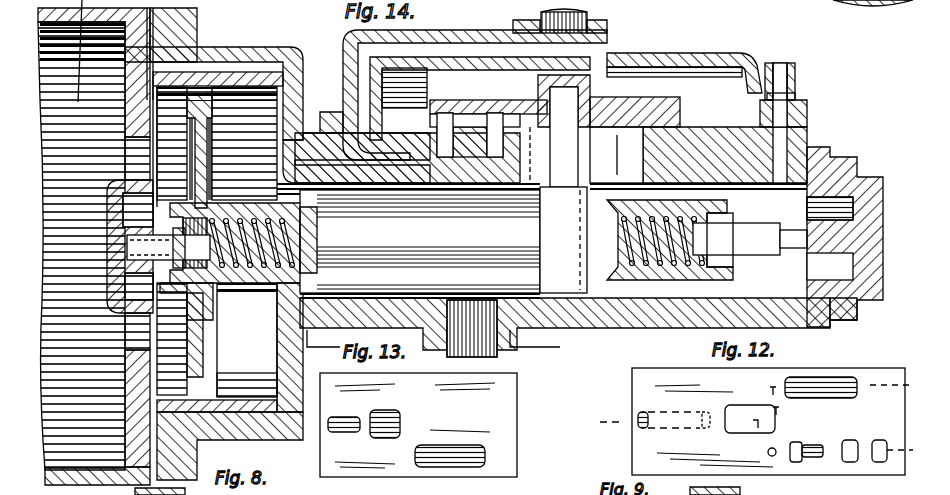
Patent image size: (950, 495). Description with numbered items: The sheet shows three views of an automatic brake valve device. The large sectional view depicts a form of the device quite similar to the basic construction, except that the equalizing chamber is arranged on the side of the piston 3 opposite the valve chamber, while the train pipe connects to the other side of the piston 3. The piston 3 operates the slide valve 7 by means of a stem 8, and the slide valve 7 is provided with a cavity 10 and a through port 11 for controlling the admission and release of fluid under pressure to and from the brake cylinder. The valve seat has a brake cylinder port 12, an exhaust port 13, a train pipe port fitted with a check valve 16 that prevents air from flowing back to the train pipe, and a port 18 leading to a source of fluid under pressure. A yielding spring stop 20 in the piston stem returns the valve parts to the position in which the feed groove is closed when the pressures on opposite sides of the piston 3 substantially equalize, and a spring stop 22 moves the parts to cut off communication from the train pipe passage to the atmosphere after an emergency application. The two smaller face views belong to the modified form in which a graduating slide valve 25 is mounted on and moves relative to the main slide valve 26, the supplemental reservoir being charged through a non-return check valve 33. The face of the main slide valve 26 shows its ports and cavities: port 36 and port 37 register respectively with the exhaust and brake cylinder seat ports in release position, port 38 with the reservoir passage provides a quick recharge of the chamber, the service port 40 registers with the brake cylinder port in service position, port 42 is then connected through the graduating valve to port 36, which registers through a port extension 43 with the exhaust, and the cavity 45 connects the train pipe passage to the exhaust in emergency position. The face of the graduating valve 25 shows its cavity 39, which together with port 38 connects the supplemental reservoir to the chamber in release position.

In FIG. 14, the piston 3 is at (204, 323).
In FIG. 14, the slide valve 7 is at (632, 103).
In FIG. 14, the stem 8 is at (570, 135).
In FIG. 14, the cavity 10 is at (462, 118).
In FIG. 14, the through port 11 is at (395, 112).
In FIG. 14, the brake cylinder port 12 is at (445, 152).
In FIG. 14, the exhaust port 13 is at (500, 150).
In FIG. 14, the check valve 16 is at (807, 107).
In FIG. 14, the port 18 is at (363, 97).
In FIG. 14, the spring stop 20 is at (143, 250).
In FIG. 14, the spring stop 22 is at (747, 244).
In FIG. 13, the graduating slide valve 25 is at (504, 408).
In FIG. 12, the main slide valve 26 is at (642, 391).
In FIG. 13, the non-return check valve 33 is at (450, 448).
In FIG. 12, the port 36 is at (795, 442).
In FIG. 12, the port 37 is at (852, 440).
In FIG. 12, the port 38 is at (640, 422).
In FIG. 13, the cavity 39 is at (350, 430).
In FIG. 12, the service port 40 is at (882, 440).
In FIG. 12, the port 42 is at (766, 452).
In FIG. 12, the port extension 43 is at (812, 448).
In FIG. 12, the cavity 45 is at (835, 385).